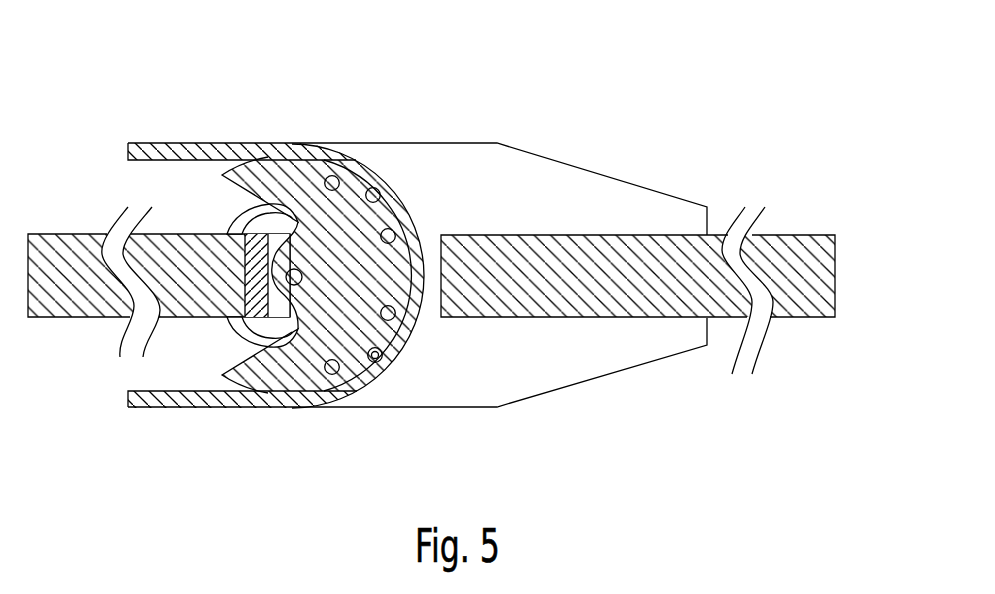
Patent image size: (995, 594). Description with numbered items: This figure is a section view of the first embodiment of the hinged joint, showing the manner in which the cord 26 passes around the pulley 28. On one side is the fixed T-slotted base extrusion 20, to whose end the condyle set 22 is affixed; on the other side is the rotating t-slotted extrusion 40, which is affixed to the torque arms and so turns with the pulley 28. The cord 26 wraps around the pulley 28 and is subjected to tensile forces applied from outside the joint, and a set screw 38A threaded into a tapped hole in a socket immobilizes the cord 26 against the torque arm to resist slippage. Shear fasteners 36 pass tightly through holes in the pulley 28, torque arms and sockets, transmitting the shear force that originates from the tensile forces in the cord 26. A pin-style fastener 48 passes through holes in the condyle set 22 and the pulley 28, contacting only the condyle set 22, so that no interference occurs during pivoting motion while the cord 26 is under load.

The T-slotted base extrusion 20 is at (98, 245).
The condyle set 22 is at (263, 253).
The cord 26 is at (190, 402).
The pulley 28 is at (302, 183).
The shear fasteners 36 is at (346, 362).
The set screw 38A is at (378, 364).
The rotating t-slotted extrusion 40 is at (548, 242).
The pin-style fastener 48 is at (298, 285).